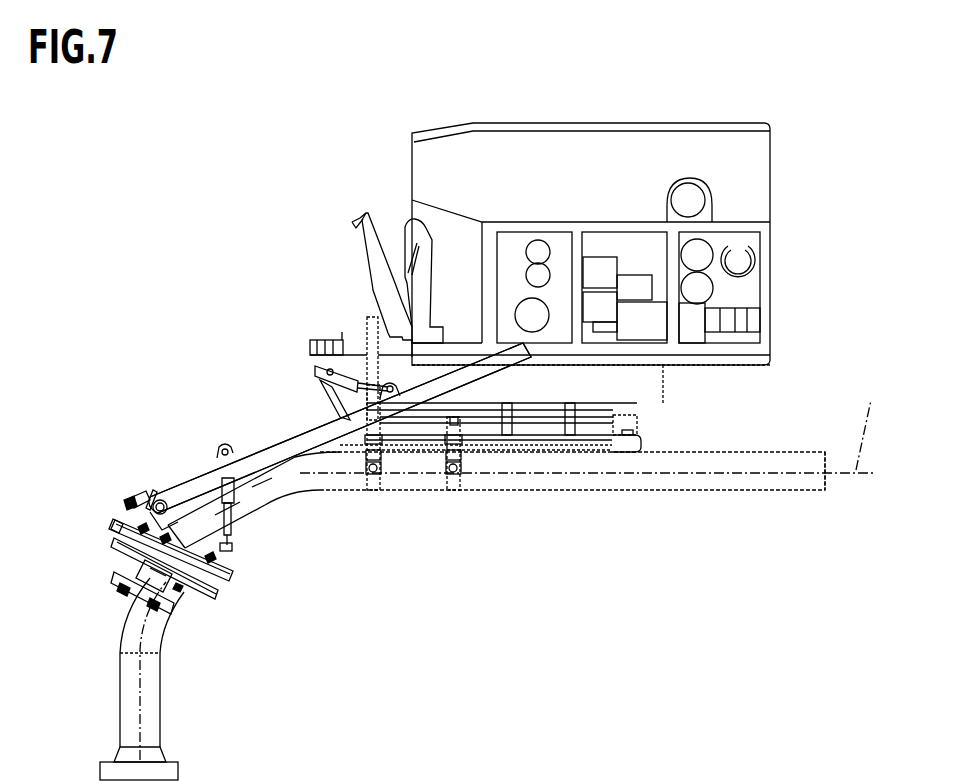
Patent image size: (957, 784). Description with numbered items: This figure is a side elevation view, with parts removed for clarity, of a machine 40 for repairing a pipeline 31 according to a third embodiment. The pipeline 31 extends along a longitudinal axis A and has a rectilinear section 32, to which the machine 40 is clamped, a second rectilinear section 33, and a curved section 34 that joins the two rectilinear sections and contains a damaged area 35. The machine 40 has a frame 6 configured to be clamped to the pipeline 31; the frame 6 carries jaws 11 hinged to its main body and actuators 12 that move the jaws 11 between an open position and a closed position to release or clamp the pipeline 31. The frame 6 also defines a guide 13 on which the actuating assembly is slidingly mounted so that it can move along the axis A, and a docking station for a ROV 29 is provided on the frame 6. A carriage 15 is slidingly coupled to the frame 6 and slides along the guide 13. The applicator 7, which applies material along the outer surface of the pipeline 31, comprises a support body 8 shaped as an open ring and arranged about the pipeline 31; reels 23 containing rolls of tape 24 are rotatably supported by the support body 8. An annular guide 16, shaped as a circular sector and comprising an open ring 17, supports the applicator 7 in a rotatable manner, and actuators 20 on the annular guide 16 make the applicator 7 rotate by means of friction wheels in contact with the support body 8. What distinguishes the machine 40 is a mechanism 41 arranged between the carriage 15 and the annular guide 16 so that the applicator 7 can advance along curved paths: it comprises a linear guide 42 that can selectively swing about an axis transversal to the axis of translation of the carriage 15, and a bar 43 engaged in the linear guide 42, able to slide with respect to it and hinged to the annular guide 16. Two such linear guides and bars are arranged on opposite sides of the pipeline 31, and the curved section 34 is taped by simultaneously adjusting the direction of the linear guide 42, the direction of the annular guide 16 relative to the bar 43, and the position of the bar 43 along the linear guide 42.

The ROV 29 is at (770, 73).
The machine 40 is at (112, 214).
The mechanism 41 is at (237, 390).
The linear guide 42 is at (333, 402).
The bar 43 is at (300, 455).
The damaged area 35 is at (190, 503).
The curved section 34 is at (270, 498).
The pipeline 31 is at (783, 497).
The rectilinear section 32 is at (773, 465).
The longitudinal axis A is at (871, 422).
The frame 6 is at (655, 447).
The carriage 15 is at (638, 413).
The jaws 11 is at (380, 480).
The actuators 12 is at (449, 482).
The guide 13 is at (568, 418).
The actuators 20 is at (136, 486).
The open ring 17 is at (126, 502).
The annular guide 16 is at (240, 582).
The support body 8 is at (222, 585).
The tape 24 is at (123, 570).
The reels 23 is at (123, 580).
The applicator 7 is at (193, 625).
The rectilinear section 33 is at (160, 727).